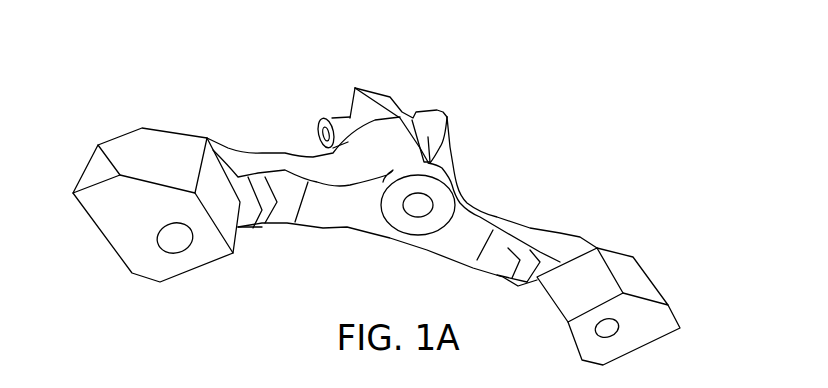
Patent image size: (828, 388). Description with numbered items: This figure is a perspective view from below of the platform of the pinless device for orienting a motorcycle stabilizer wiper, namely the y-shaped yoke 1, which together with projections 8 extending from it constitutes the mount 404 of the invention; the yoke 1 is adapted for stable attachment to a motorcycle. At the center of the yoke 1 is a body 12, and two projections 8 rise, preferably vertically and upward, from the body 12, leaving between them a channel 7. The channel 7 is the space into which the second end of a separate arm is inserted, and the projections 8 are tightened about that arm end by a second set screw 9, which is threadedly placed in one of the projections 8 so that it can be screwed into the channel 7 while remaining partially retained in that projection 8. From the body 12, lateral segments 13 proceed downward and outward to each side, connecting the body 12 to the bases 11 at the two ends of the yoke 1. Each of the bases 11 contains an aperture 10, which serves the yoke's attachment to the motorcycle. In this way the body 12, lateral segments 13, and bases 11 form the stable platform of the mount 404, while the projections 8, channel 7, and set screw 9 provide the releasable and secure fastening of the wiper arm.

The y-shaped yoke 1 is at (538, 167).
The mount 404 is at (572, 73).
The channel 7 is at (405, 105).
The projections 8 is at (372, 93).
The second set screw 9 is at (320, 130).
The aperture 10 is at (178, 243).
The bases 11 is at (125, 250).
The body 12 is at (378, 230).
The lateral segments 13 is at (262, 223).